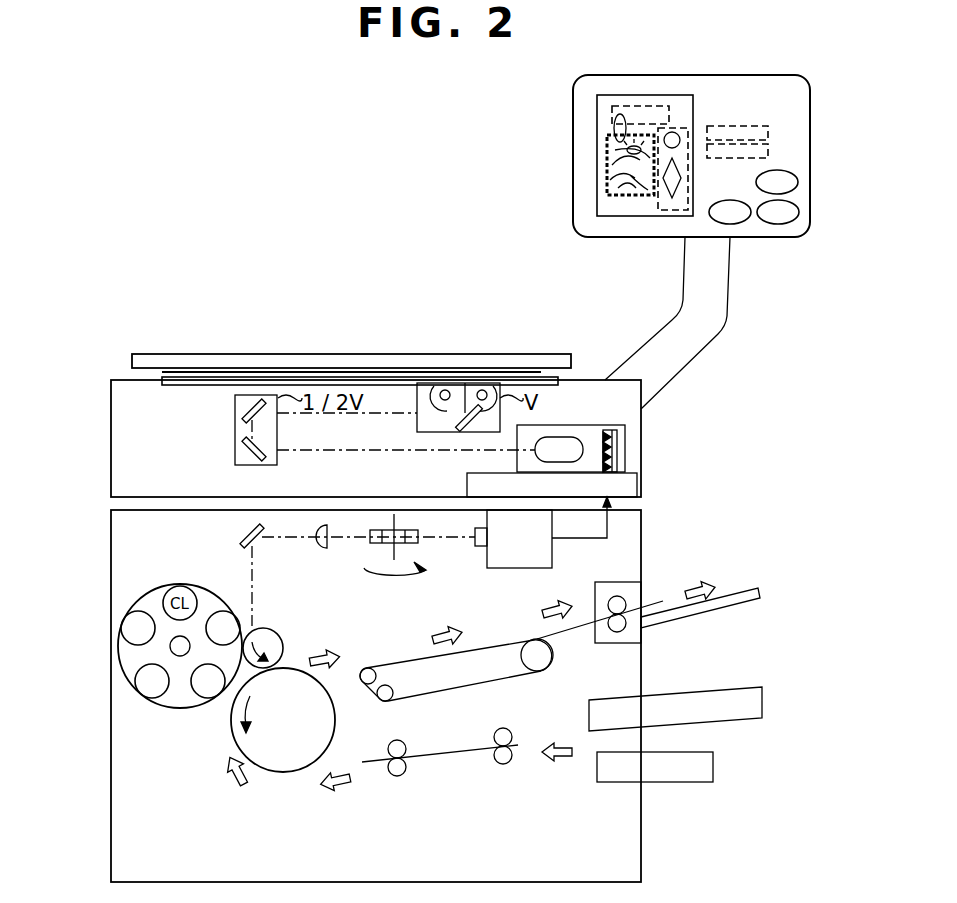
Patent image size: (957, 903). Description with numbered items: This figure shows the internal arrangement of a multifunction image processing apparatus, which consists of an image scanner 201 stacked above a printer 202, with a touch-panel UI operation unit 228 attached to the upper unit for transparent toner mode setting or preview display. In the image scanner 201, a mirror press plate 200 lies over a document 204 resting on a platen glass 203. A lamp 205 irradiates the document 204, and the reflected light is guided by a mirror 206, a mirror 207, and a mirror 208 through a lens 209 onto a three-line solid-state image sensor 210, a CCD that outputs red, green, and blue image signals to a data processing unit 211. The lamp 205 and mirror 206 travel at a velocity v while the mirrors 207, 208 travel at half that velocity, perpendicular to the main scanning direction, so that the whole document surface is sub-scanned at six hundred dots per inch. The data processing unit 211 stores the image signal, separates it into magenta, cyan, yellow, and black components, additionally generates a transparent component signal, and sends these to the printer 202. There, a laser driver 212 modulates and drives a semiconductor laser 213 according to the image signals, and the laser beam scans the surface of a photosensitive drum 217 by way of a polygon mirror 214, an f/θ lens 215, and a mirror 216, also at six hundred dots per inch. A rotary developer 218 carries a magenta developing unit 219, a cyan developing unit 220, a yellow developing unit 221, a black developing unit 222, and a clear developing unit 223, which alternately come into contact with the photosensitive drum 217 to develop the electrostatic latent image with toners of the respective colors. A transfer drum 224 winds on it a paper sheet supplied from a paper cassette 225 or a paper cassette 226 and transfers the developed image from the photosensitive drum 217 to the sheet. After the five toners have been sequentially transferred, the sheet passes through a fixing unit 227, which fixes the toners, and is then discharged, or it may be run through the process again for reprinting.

The mirror press plate 200 is at (318, 354).
The image scanner 201 is at (111, 398).
The printer 202 is at (111, 528).
The platen glass 203 is at (548, 378).
The document 204 is at (536, 372).
The lamp 205 is at (482, 388).
The mirror 206 is at (465, 432).
The mirror 207 is at (243, 408).
The mirror 208 is at (243, 452).
The lens 209 is at (578, 437).
The three-line solid-state image sensor 210 is at (617, 440).
The data processing unit 211 is at (637, 487).
The laser driver 212 is at (553, 557).
The semiconductor laser 213 is at (478, 548).
The polygon mirror 214 is at (372, 540).
The f/θ lens 215 is at (316, 548).
The mirror 216 is at (243, 545).
The photosensitive drum 217 is at (283, 640).
The rotary developer 218 is at (153, 708).
The magenta developing unit 219 is at (223, 611).
The cyan developing unit 220 is at (200, 697).
The yellow developing unit 221 is at (135, 672).
The black developing unit 222 is at (138, 611).
The clear developing unit 223 is at (162, 587).
The transfer drum 224 is at (282, 773).
The paper cassette 225 is at (695, 782).
The paper cassette 226 is at (744, 718).
The fixing unit 227 is at (608, 645).
The UI operation unit 228 is at (573, 113).